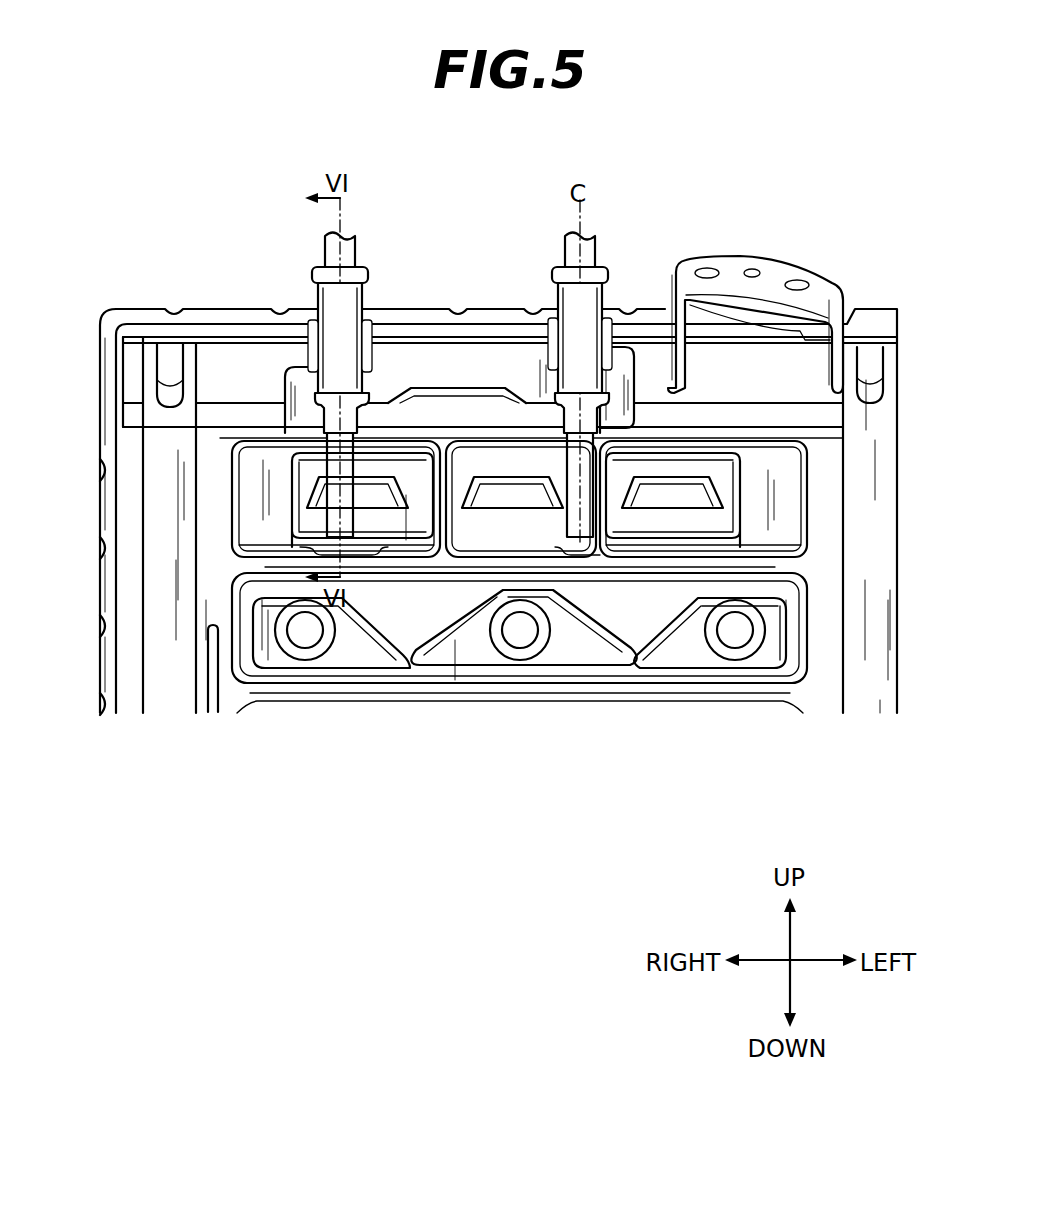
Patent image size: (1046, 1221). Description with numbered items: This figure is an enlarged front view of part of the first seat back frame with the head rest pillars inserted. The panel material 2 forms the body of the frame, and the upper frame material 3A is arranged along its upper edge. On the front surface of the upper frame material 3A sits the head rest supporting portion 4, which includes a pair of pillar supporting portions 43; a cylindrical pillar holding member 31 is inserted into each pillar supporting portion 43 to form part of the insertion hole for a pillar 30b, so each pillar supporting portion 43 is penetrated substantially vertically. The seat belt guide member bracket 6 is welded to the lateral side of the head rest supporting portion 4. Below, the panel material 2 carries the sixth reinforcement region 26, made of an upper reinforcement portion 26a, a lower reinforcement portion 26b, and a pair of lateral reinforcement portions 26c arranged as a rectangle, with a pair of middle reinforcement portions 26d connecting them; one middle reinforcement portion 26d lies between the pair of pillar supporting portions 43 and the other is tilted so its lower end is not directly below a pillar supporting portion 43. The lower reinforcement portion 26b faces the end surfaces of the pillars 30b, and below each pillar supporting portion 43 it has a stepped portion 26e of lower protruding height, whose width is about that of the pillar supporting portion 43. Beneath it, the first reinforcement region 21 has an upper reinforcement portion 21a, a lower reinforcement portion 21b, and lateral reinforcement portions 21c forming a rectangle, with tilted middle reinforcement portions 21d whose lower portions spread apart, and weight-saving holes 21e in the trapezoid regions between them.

The panel material 2 is at (105, 310).
The upper frame material 3A is at (233, 363).
The pillar 30b is at (327, 470).
The pillar holding member 31 is at (320, 275).
The pillar supporting portion 43 is at (573, 297).
The head rest supporting portion 4 is at (447, 349).
The seat belt guide member bracket 6 is at (775, 272).
The sixth reinforcement region 26 is at (222, 478).
The upper reinforcement portion 26a is at (685, 450).
The lower reinforcement portion 26b is at (692, 547).
The lateral reinforcement portion 26c is at (258, 497).
The middle reinforcement portion 26d is at (440, 507).
The stepped portion 26e is at (361, 548).
The first reinforcement region 21 is at (226, 633).
The upper reinforcement portion 21a is at (500, 582).
The lower reinforcement portion 21b is at (523, 678).
The lateral reinforcement portion 21c is at (793, 633).
The middle reinforcement portion 21d is at (403, 632).
The hole 21e is at (302, 648).